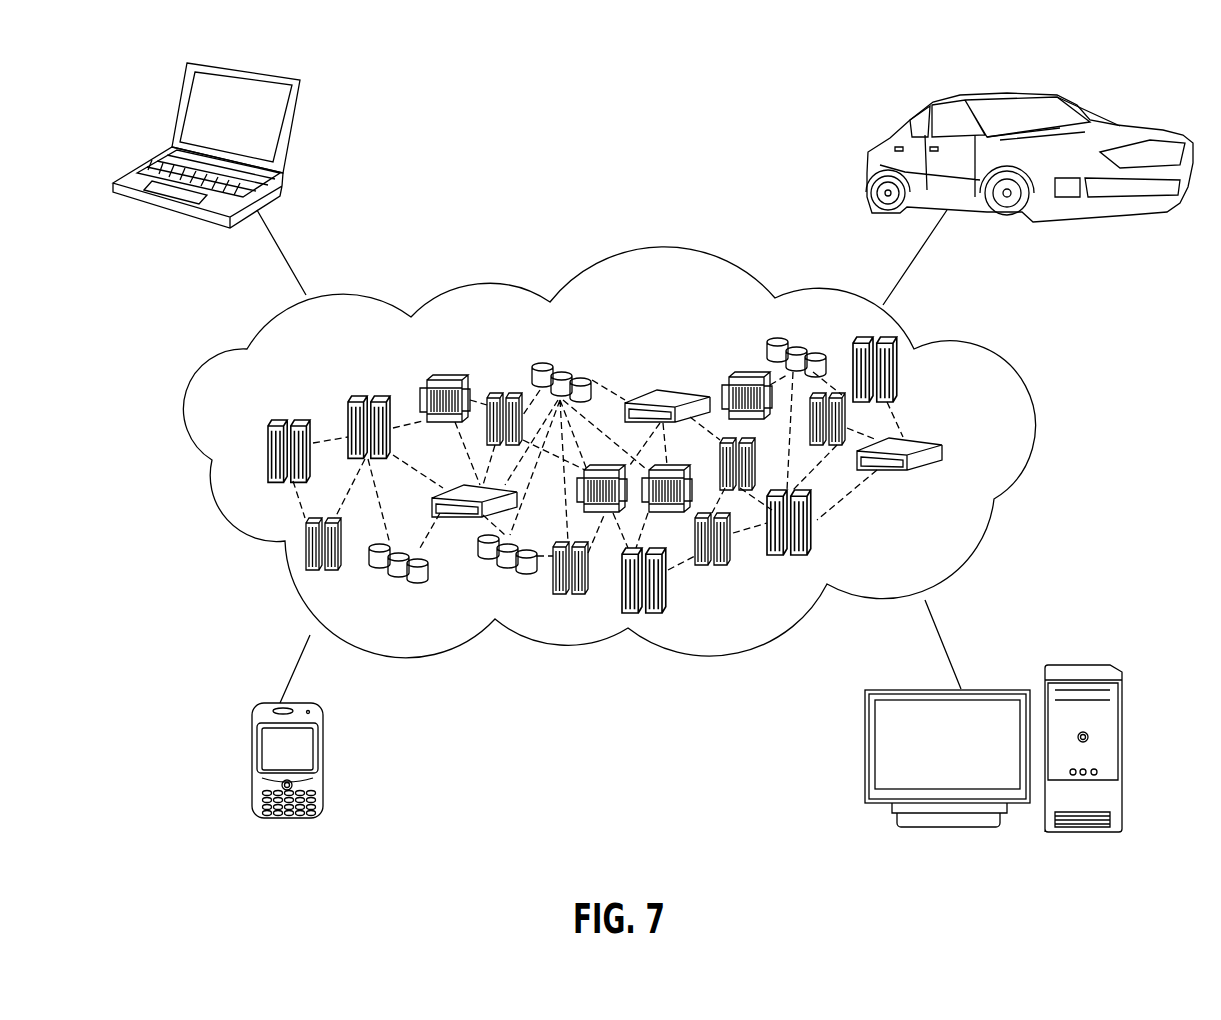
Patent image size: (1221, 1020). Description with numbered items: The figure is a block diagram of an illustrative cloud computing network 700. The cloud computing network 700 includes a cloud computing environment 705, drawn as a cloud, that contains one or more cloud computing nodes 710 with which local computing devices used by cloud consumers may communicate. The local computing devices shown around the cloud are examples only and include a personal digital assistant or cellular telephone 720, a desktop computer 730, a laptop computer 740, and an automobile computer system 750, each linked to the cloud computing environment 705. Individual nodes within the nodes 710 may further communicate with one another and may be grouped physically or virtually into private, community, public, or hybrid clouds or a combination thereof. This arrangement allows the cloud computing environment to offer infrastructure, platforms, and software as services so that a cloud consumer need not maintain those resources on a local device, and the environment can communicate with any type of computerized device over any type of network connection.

The cloud computing network 700 is at (627, 39).
The cloud computing environment 705 is at (1005, 366).
The cloud computing nodes 710 is at (979, 452).
The cellular telephone 720 is at (257, 765).
The desktop computer 730 is at (1088, 665).
The laptop computer 740 is at (293, 130).
The automobile computer system 750 is at (875, 140).